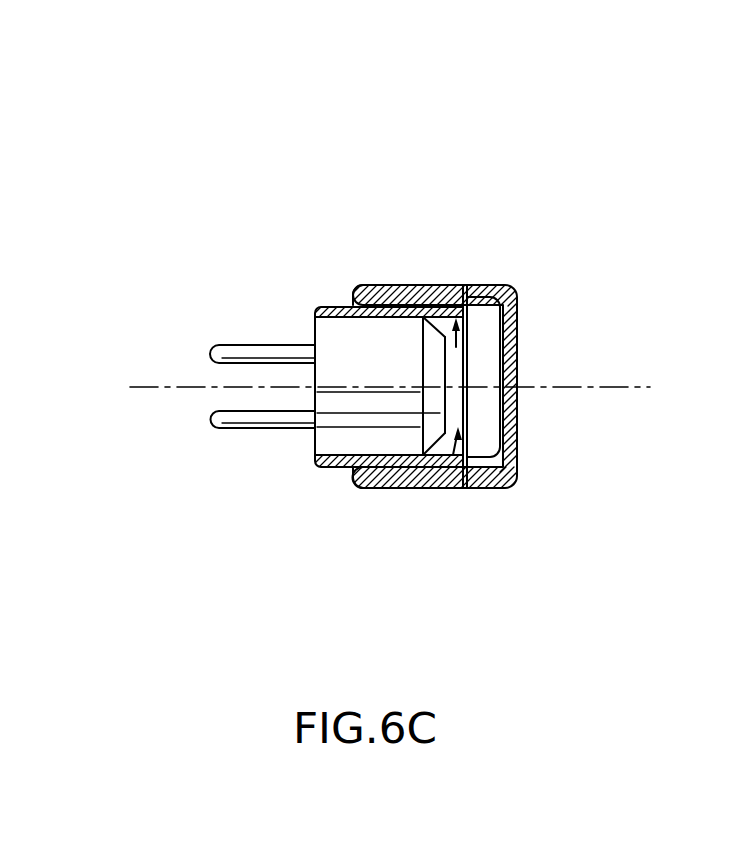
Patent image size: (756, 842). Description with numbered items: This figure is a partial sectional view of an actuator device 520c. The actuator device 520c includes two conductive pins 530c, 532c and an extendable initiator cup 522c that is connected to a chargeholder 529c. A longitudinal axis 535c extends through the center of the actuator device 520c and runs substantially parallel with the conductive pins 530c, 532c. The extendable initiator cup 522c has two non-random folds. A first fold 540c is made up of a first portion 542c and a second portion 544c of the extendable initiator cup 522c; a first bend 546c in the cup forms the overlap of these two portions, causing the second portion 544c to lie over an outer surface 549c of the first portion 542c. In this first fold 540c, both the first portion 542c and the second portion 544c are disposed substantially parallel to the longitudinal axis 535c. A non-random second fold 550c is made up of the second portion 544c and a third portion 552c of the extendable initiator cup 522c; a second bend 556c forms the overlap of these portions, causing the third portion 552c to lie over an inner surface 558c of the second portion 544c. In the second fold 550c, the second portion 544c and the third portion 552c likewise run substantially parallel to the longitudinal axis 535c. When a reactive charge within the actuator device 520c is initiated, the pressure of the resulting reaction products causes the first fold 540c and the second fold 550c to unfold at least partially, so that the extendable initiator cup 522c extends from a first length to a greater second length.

The actuator device 520c is at (160, 216).
The extendable initiator cup 522c is at (320, 307).
The chargeholder 529c is at (315, 335).
The conductive pin 530c is at (212, 423).
The conductive pin 532c is at (212, 348).
The longitudinal axis 535c is at (620, 386).
The first fold 540c is at (470, 356).
The first portion 542c is at (392, 453).
The second portion 544c is at (455, 318).
The first bend 546c is at (509, 313).
The outer surface 549c is at (380, 297).
The second fold 550c is at (398, 270).
The third portion 552c is at (420, 297).
The second bend 556c is at (352, 297).
The inner surface 558c is at (470, 297).